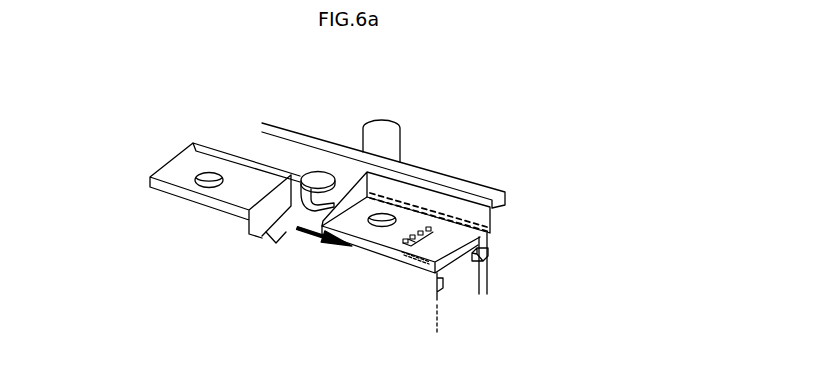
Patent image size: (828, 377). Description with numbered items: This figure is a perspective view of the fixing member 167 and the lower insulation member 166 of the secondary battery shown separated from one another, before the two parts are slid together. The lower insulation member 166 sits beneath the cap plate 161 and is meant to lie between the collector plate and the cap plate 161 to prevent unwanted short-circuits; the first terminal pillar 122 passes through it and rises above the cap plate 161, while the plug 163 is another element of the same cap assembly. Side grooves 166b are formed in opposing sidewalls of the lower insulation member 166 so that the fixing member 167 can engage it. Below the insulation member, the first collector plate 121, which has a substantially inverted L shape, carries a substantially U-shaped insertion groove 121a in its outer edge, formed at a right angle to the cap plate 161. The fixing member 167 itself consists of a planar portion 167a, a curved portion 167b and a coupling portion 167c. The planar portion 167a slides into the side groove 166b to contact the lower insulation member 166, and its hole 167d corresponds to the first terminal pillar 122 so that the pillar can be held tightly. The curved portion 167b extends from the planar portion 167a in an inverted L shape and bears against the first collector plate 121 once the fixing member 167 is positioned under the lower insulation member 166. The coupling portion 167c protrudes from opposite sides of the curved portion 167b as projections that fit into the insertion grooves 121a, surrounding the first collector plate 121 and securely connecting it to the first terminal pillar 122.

The first collector plate 121 is at (473, 275).
The insertion groove 121a is at (489, 257).
The first terminal pillar 122 is at (391, 139).
The cap plate 161 is at (492, 196).
The plug 163 is at (314, 178).
The lower insulation member 166 is at (493, 215).
The side groove 166b is at (493, 235).
The fixing member 167 is at (213, 248).
The planar portion 167a is at (222, 195).
The curved portion 167b is at (253, 222).
The coupling portion 167c is at (292, 268).
The hole 167d is at (176, 193).